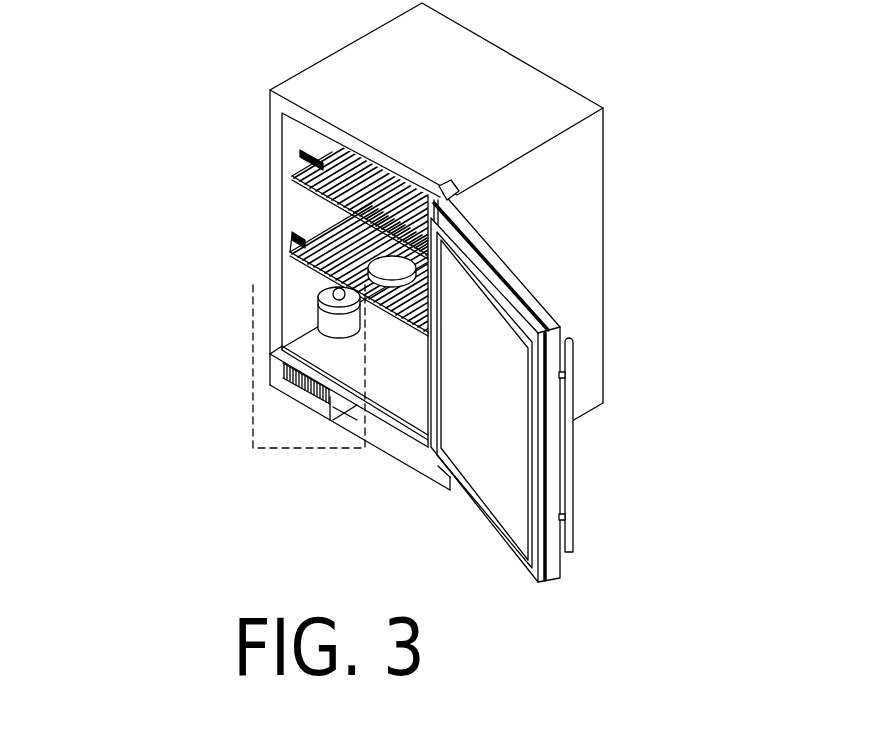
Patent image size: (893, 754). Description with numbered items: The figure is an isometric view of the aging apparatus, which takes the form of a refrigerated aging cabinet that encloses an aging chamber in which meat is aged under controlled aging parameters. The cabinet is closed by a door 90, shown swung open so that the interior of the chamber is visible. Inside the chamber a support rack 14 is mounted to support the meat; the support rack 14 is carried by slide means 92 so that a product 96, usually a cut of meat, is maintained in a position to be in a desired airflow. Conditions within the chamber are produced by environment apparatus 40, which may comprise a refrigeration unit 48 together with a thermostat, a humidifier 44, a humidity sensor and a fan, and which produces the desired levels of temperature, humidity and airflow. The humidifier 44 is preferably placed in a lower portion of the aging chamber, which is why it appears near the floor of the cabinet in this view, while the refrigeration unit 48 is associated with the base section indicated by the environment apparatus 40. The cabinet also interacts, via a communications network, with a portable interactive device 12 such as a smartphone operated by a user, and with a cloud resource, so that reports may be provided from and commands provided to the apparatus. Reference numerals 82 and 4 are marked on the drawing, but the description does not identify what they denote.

The portable interactive device 12 is at (612, 0).
The door 90 is at (517, 443).
The upper shelf 82 is at (292, 175).
The slide means 92 is at (292, 235).
The support rack 14 is at (290, 252).
The storage compartment interior 4 is at (345, 268).
The product 96 is at (324, 288).
The humidifier 44 is at (322, 306).
The environment apparatus 40 is at (270, 378).
The refrigeration unit 48 is at (300, 390).